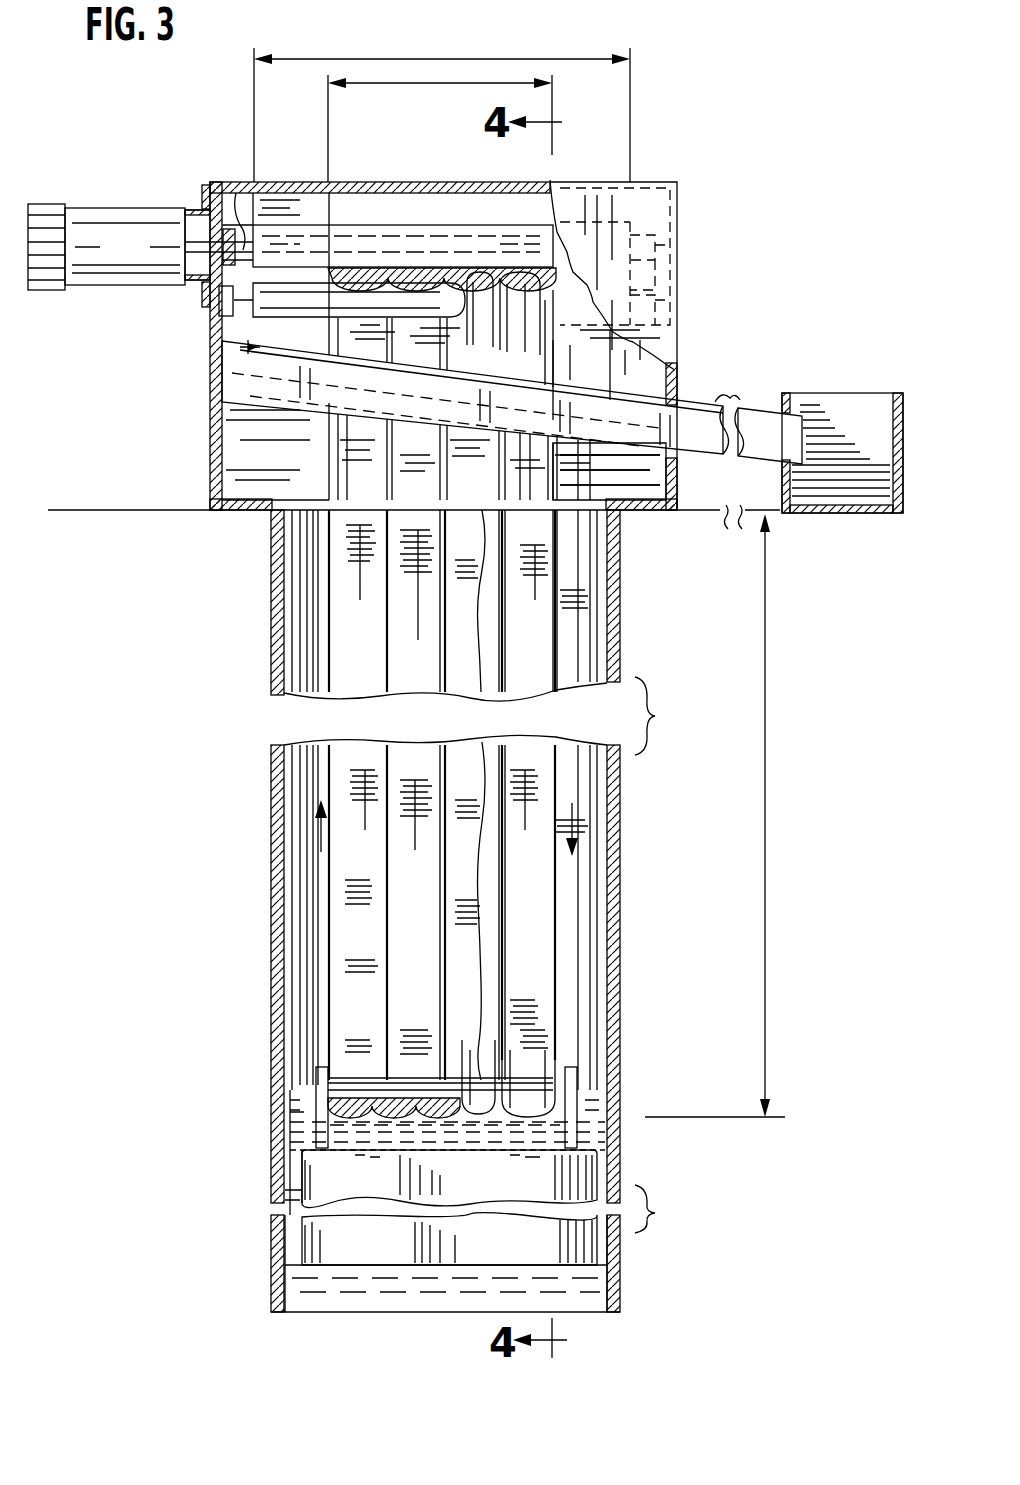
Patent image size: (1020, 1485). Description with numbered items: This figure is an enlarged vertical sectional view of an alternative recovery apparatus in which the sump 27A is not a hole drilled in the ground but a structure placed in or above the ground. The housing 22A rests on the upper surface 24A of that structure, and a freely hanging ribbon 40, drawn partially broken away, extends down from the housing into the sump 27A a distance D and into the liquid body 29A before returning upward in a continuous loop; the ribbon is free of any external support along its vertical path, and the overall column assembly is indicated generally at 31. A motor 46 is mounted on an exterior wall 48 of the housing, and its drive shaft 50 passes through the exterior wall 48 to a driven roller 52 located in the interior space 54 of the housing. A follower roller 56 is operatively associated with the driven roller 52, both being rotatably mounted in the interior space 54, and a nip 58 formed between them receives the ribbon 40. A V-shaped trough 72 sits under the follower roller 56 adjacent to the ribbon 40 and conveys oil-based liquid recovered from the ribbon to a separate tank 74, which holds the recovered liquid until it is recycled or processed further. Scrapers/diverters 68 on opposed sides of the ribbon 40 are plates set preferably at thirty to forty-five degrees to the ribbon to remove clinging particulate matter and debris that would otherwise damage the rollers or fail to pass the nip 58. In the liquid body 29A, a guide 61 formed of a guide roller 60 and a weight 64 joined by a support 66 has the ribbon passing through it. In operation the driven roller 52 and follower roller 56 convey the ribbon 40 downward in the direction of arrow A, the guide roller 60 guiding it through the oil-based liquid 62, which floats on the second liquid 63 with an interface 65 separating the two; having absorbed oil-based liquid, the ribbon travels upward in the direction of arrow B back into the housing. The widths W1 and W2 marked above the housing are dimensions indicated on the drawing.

The housing 22A is at (678, 203).
The upper surface 24A is at (643, 497).
The sump 27A is at (620, 1013).
The liquid body 29A is at (268, 1148).
The column assembly 31 is at (421, 911).
The ribbon 40 is at (560, 355).
The motor 46 is at (141, 257).
The exterior wall 48 is at (237, 323).
The drive shaft 50 is at (247, 227).
The driven roller 52 is at (313, 223).
The interior space 54 is at (393, 219).
The follower roller 56 is at (238, 328).
The nip 58 is at (572, 270).
The guide roller 60 is at (565, 1083).
The guide 61 is at (285, 1192).
The oil-based liquid 62 is at (305, 1110).
The second liquid 63 is at (593, 1287).
The weight 64 is at (585, 1173).
The interface 65 is at (293, 1130).
The support 66 is at (580, 1097).
The scrapers/diverters 68 is at (213, 343).
The V-shaped trough 72 is at (230, 380).
The tank 74 is at (825, 392).
The width dimension W1 is at (565, 58).
The width dimension W2 is at (385, 88).
The distance D is at (715, 811).
The arrow A is at (573, 828).
The arrow B is at (317, 840).